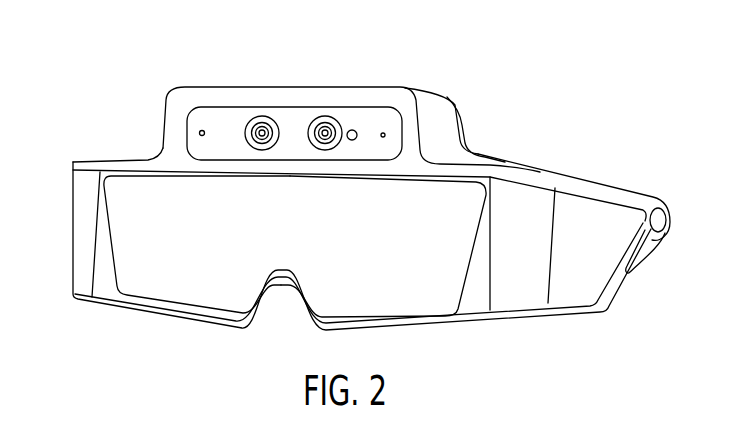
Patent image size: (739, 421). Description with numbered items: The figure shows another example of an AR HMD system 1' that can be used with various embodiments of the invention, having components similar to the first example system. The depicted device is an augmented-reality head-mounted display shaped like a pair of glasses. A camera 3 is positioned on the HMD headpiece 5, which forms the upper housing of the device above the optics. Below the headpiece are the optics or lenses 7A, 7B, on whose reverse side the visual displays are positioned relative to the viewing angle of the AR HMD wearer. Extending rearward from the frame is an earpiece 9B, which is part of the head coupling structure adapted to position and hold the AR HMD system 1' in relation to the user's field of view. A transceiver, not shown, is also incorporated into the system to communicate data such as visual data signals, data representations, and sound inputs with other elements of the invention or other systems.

The AR HMD system 1' is at (362, 175).
The camera 3 is at (262, 117).
The HMD headpiece 5 is at (167, 157).
The optic or lens 7A is at (137, 220).
The optic or lens 7B is at (428, 263).
The earpiece 9B is at (617, 188).